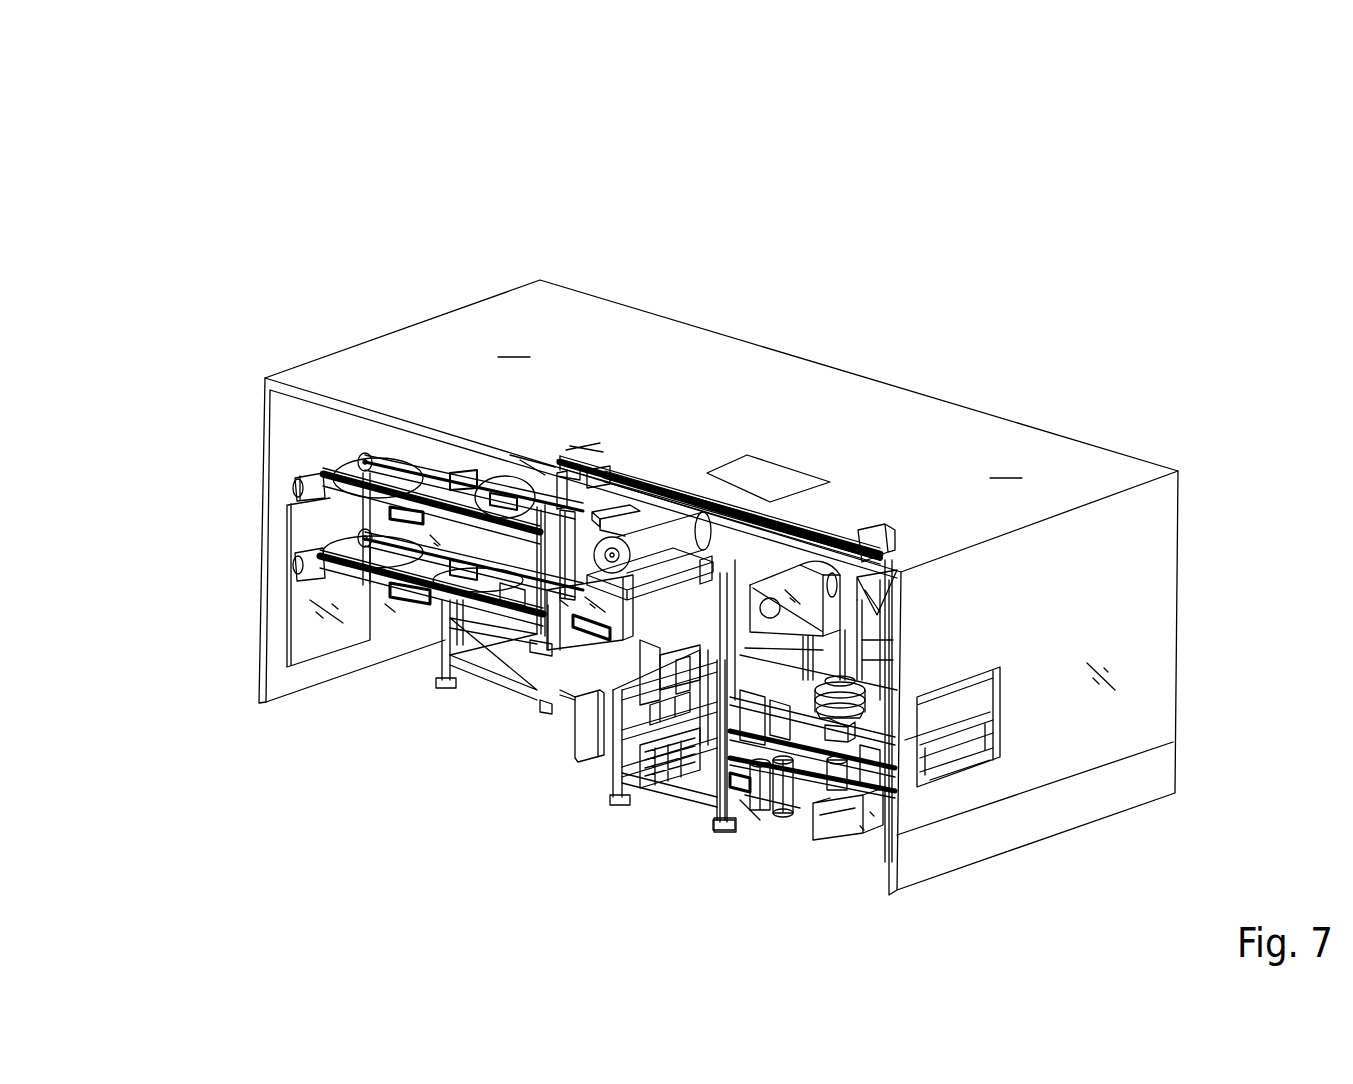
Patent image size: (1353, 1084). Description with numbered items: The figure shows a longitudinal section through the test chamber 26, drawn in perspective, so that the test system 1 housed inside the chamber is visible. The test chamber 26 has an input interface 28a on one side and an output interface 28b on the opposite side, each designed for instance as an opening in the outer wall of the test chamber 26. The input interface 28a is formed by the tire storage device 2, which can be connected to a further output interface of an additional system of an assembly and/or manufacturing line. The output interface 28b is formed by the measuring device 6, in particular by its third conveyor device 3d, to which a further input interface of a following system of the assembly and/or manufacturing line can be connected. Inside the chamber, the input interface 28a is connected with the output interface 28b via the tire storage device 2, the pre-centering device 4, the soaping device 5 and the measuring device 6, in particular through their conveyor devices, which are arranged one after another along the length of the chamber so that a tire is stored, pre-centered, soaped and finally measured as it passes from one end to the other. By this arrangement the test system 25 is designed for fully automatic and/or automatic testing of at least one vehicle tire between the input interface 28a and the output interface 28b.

The test system 1 is at (265, 833).
The tire storage device 2 is at (257, 708).
The third conveyor device 3d is at (917, 780).
The pre-centering device 4 is at (510, 795).
The soaping device 5 is at (620, 818).
The measuring device 6 is at (724, 850).
The test system 25 is at (1007, 198).
The test chamber 26 is at (787, 345).
The input interface 28a is at (320, 519).
The output interface 28b is at (960, 698).